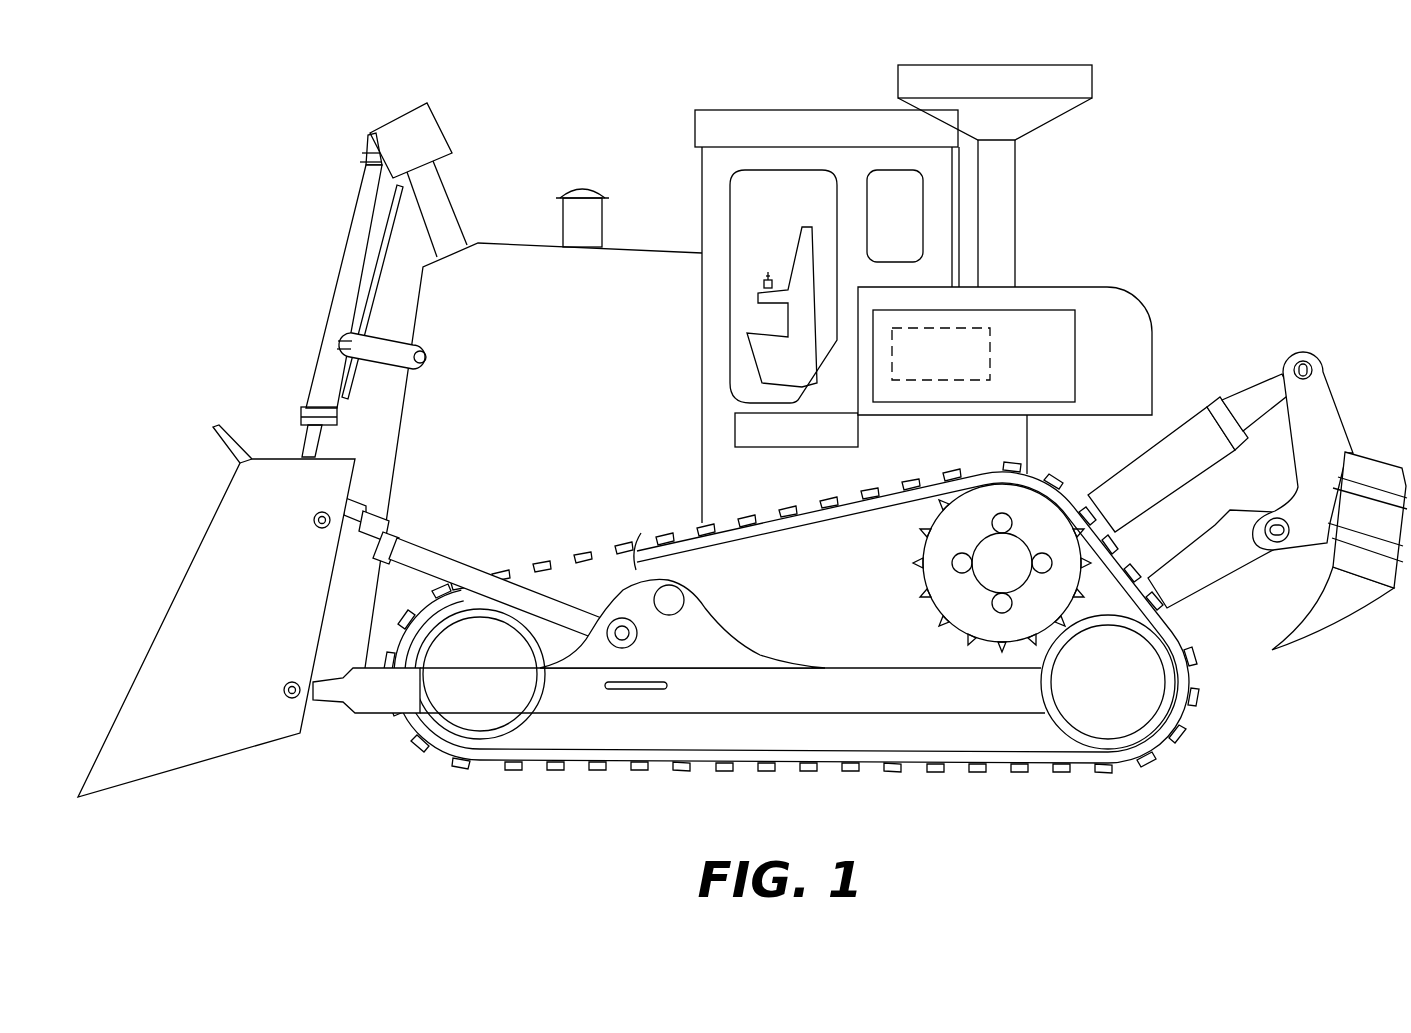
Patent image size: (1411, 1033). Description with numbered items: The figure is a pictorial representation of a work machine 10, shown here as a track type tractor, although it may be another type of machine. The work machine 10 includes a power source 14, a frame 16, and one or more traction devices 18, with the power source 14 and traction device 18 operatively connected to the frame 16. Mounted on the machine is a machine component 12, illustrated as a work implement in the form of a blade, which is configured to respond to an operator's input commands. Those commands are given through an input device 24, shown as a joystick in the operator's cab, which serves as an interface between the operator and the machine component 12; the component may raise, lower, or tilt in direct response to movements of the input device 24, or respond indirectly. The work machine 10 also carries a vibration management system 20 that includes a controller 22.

The work machine 10 is at (1210, 121).
The machine component 12 is at (190, 740).
The power source 14 is at (560, 284).
The frame 16 is at (717, 623).
The traction device 18 is at (1183, 722).
The vibration management system 20 is at (1055, 310).
The controller 22 is at (992, 362).
The input device 24 is at (768, 272).